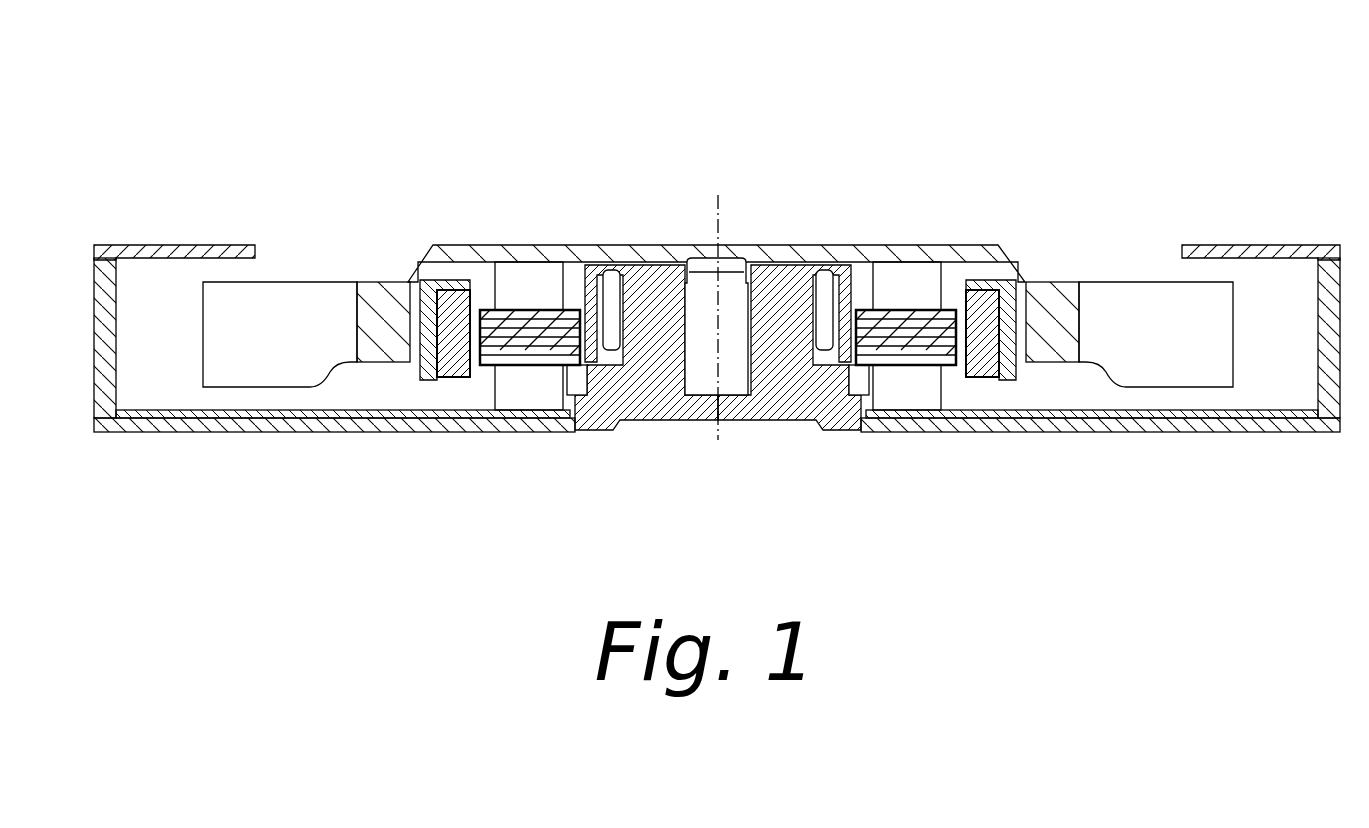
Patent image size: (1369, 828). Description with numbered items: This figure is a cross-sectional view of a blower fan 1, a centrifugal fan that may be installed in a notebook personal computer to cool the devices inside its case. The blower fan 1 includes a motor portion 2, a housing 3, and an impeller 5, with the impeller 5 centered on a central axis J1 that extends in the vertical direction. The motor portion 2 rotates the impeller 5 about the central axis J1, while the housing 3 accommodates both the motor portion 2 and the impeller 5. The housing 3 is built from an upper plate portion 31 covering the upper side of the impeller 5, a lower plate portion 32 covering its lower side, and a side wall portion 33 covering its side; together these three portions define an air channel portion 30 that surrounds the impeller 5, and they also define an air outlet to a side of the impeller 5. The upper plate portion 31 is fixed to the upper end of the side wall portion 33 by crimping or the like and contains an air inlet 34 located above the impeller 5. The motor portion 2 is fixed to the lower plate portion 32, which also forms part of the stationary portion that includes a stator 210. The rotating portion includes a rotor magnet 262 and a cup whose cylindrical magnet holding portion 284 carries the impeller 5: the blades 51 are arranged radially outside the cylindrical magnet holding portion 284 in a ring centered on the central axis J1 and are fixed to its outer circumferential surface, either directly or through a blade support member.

The blower fan 1 is at (125, 127).
The motor portion 2 is at (729, 360).
The housing 3 is at (115, 182).
The impeller 5 is at (718, 267).
The air channel portion 30 is at (717, 360).
The upper plate portion 31 is at (138, 247).
The lower plate portion 32 is at (213, 423).
The side wall portion 33 is at (104, 402).
The air inlet 34 is at (291, 256).
The blades 51 is at (300, 312).
The stator 210 is at (920, 360).
The rotor magnet 262 is at (980, 378).
The cylindrical magnet holding portion 284 is at (1050, 303).
The central axis J1 is at (718, 228).